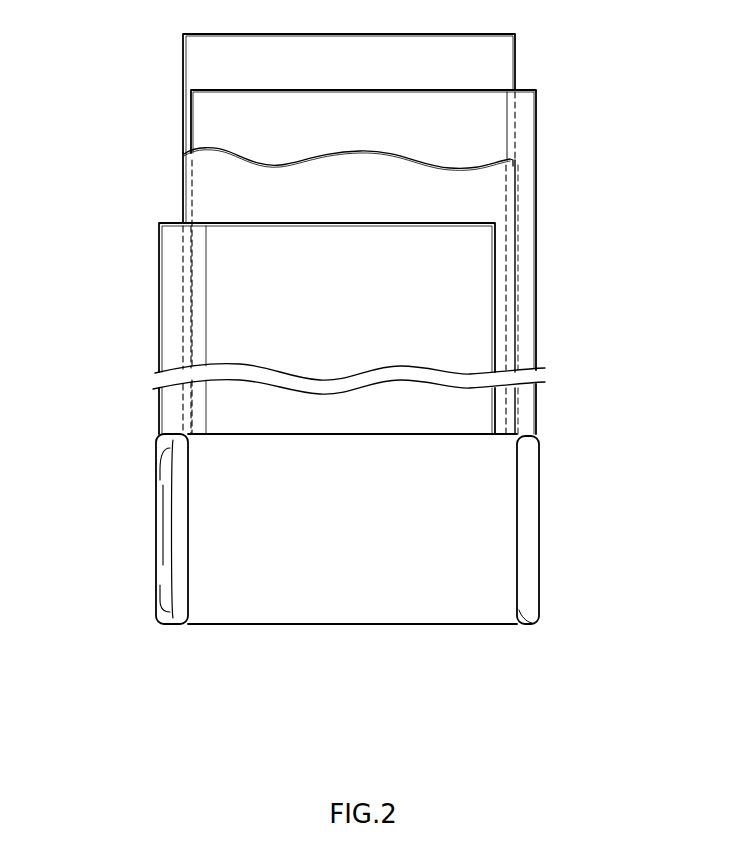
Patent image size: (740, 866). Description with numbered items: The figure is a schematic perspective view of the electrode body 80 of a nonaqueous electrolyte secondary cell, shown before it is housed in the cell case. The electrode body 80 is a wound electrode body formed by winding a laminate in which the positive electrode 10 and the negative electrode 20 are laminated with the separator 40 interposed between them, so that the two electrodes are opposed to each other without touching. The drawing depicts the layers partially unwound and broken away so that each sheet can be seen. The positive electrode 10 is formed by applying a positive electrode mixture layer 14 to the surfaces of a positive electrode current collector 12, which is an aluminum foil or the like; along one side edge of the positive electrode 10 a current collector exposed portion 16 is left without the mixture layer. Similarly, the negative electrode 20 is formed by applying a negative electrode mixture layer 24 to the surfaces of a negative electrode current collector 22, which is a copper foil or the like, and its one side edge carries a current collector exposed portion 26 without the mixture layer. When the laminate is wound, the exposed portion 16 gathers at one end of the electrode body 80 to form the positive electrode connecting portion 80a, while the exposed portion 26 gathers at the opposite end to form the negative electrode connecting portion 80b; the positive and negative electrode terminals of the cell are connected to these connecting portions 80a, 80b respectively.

The positive electrode 10 is at (159, 293).
The positive electrode current collector 12 is at (158, 362).
The positive electrode mixture layer 14 is at (220, 242).
The current collector exposed portion 16 is at (173, 329).
The negative electrode 20 is at (538, 169).
The negative electrode current collector 22 is at (539, 268).
The negative electrode mixture layer 24 is at (502, 117).
The current collector exposed portion 26 is at (523, 240).
The separator 40 is at (203, 53).
The electrode body 80 is at (409, 603).
The positive electrode connecting portion 80a is at (176, 625).
The negative electrode connecting portion 80b is at (523, 625).